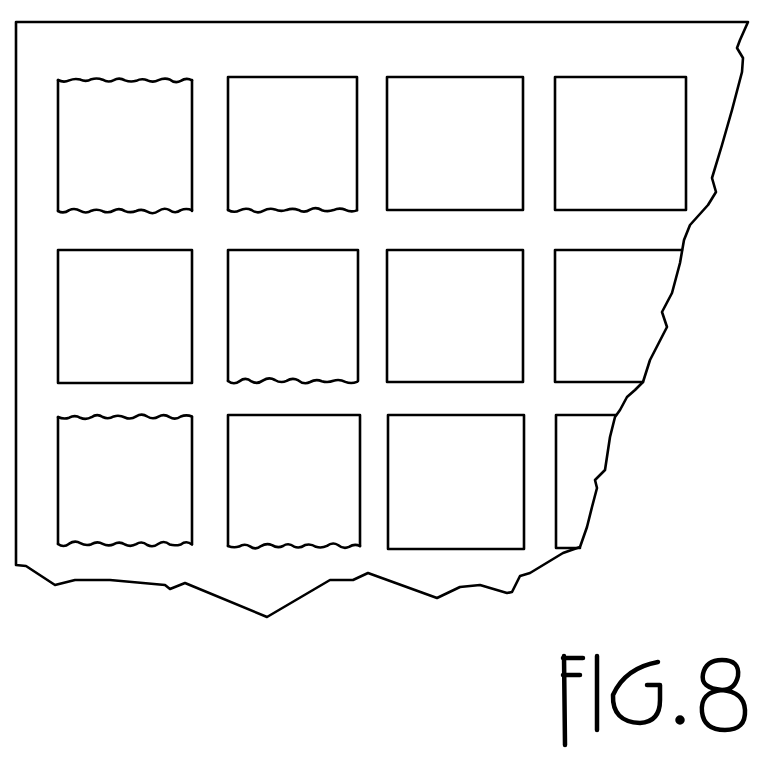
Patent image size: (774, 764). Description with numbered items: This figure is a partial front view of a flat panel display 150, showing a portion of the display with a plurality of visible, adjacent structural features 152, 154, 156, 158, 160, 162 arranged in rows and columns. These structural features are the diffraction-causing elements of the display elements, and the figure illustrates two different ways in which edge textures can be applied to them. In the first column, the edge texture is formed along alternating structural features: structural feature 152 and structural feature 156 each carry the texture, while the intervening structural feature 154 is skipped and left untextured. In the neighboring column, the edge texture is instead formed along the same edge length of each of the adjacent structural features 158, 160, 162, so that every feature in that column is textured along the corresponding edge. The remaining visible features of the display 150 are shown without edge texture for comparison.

The flat panel display 150 is at (645, 407).
The structural feature 152 is at (138, 162).
The structural feature 154 is at (137, 336).
The structural feature 156 is at (143, 503).
The structural feature 158 is at (308, 162).
The structural feature 160 is at (320, 337).
The structural feature 162 is at (310, 504).